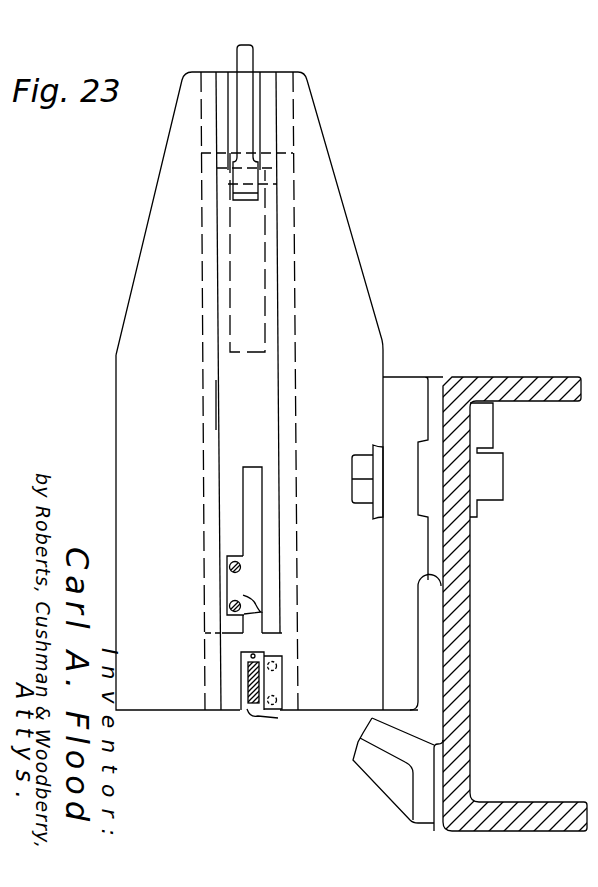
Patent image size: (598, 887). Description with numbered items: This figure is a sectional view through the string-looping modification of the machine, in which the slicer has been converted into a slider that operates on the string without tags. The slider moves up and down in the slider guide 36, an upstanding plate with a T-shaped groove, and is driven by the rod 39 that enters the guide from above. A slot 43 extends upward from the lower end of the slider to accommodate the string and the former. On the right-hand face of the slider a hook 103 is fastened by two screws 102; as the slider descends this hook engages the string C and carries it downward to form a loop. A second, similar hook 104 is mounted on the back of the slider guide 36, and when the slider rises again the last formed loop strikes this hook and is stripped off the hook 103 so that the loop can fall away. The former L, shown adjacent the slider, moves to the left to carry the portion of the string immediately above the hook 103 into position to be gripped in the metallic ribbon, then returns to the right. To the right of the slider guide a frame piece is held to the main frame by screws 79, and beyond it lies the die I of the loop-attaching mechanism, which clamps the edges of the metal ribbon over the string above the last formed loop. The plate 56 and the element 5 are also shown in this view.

The upstanding plate 36 is at (345, 243).
The rod 39 is at (253, 63).
The plate 56 is at (415, 376).
The screws 79 is at (361, 454).
The male die I is at (597, 342).
The hook 104 is at (278, 718).
The wall 5 is at (232, 396).
The slot 43 is at (248, 506).
The hook 103 is at (232, 587).
The screws 102 is at (226, 563).
The string C is at (256, 653).
The looper L is at (251, 692).